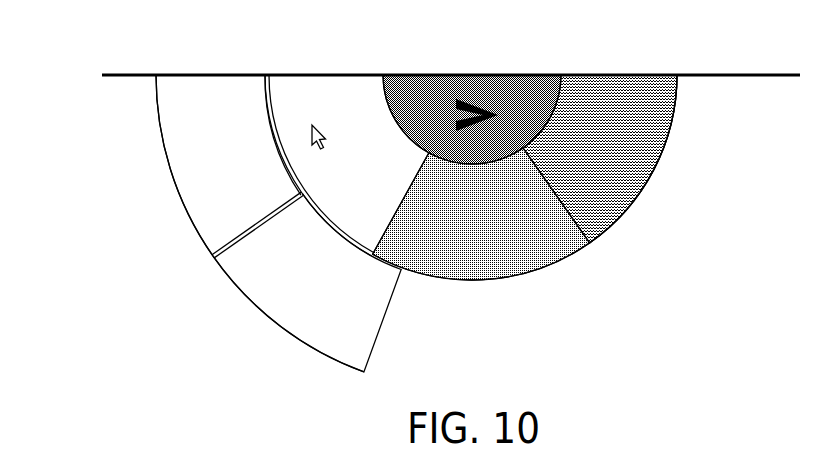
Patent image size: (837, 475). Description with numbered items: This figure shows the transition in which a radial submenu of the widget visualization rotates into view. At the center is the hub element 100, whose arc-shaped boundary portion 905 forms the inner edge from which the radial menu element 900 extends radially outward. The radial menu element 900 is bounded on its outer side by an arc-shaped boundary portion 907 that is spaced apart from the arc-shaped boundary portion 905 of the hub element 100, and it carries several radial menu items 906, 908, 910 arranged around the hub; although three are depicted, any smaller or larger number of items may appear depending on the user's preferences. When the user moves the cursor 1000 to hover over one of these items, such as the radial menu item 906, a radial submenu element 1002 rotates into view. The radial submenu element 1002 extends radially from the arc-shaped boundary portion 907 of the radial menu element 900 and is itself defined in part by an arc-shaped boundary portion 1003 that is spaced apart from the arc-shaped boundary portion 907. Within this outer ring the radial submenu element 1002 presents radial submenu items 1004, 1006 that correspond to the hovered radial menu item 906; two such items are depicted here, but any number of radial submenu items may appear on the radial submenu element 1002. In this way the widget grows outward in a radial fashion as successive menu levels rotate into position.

The radial menu element 900 is at (716, 138).
The hub element 100 is at (527, 85).
The arc-shaped boundary portion of the hub element 905 is at (565, 102).
The radial menu item 906 is at (293, 92).
The arc-shaped boundary portion of the radial menu element 907 is at (613, 235).
The radial menu item 908 is at (542, 250).
The radial menu item 910 is at (645, 168).
The cursor 1000 is at (313, 124).
The radial submenu element 1002 is at (143, 176).
The arc-shaped boundary portion of the radial submenu element 1003 is at (243, 300).
The radial submenu item 1004 is at (200, 210).
The radial submenu item 1006 is at (290, 318).